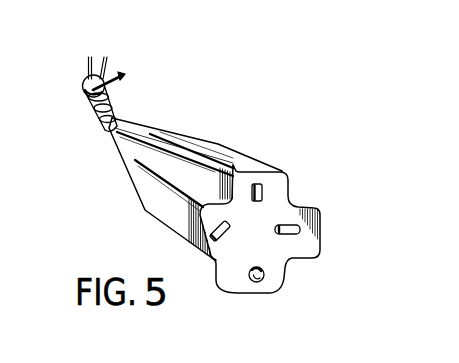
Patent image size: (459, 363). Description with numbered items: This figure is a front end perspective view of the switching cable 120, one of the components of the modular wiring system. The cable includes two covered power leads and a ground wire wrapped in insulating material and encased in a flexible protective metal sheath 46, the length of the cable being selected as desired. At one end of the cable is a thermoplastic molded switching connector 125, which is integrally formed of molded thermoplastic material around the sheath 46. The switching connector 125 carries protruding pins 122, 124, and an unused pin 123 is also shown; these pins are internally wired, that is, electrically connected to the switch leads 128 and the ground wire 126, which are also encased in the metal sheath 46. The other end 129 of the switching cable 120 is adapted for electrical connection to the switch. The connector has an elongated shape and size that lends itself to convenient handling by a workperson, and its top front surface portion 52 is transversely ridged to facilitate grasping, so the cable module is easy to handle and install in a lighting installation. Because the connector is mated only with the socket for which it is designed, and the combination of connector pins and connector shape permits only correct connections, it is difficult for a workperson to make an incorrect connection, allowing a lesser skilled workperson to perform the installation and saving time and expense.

The switching cable 120 is at (252, 149).
The switching connector 125 is at (160, 204).
The top front surface portion 52 is at (200, 141).
The unused pin 123 is at (263, 193).
The protruding pin 122 is at (228, 237).
The protruding pin 124 is at (263, 282).
The flexible protective metal sheath 46 is at (122, 108).
The other end 129 is at (83, 88).
The ground wire 126 is at (91, 57).
The switch leads 128 is at (107, 58).